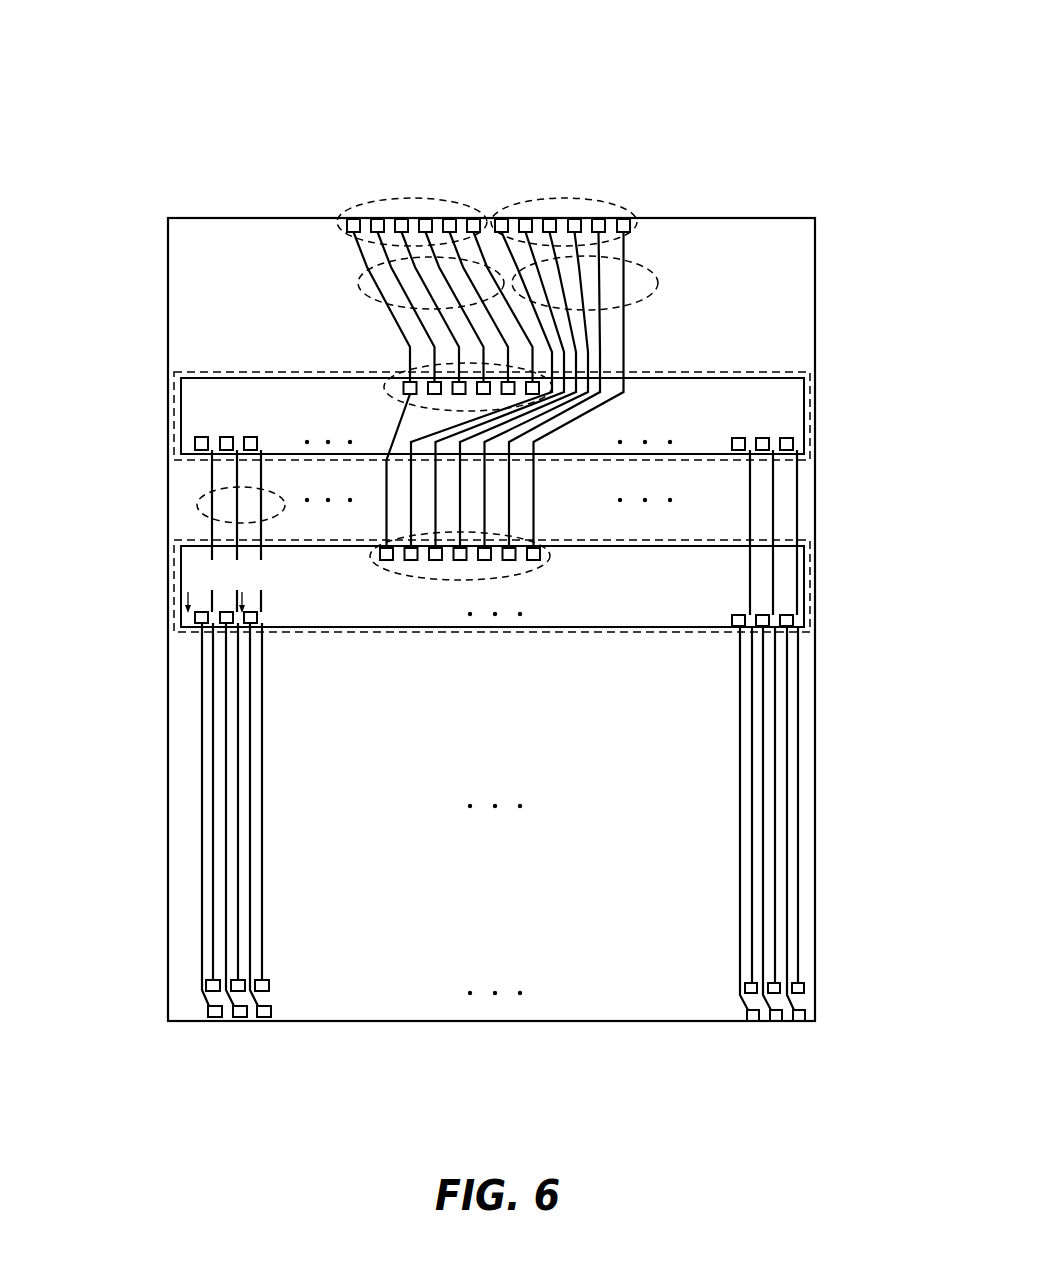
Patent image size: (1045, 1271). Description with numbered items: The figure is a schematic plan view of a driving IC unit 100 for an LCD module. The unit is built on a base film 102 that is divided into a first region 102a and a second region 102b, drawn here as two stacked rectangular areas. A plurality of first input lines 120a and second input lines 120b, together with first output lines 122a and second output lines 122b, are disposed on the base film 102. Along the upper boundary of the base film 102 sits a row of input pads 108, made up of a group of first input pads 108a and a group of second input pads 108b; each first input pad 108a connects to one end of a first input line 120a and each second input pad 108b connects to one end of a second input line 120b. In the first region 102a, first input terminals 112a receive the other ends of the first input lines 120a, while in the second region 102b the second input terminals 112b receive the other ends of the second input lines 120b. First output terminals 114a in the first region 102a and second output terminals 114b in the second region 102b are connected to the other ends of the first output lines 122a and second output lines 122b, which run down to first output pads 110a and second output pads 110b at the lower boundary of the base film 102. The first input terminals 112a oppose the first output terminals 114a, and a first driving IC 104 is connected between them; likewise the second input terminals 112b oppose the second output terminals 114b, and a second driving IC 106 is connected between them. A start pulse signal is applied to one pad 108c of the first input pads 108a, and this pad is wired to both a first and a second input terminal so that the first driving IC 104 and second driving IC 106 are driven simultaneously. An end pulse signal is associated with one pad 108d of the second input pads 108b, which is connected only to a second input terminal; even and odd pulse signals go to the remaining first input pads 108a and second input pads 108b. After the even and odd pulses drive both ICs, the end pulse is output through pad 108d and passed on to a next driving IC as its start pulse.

The driving IC unit 100 is at (851, 176).
The base film 102 is at (700, 243).
The first region 102a is at (780, 372).
The second region 102b is at (715, 542).
The first driving IC 104 is at (793, 417).
The second driving IC 106 is at (803, 587).
The input pads 108 is at (613, 78).
The first input pads 108a is at (427, 196).
The second input pads 108b is at (542, 198).
The one pad of the first input pads 108c is at (353, 207).
The one pad of the second input pads 108d is at (625, 207).
The first output pads 110a is at (203, 993).
The second output pads 110b is at (215, 1010).
The first input terminals 112a is at (403, 388).
The second input terminals 112b is at (403, 580).
The first output terminals 114a is at (197, 442).
The second output terminals 114b is at (193, 623).
The first input lines 120a is at (365, 272).
The second input lines 120b is at (658, 282).
The first output lines 122a is at (198, 500).
The second output lines 122b is at (249, 812).